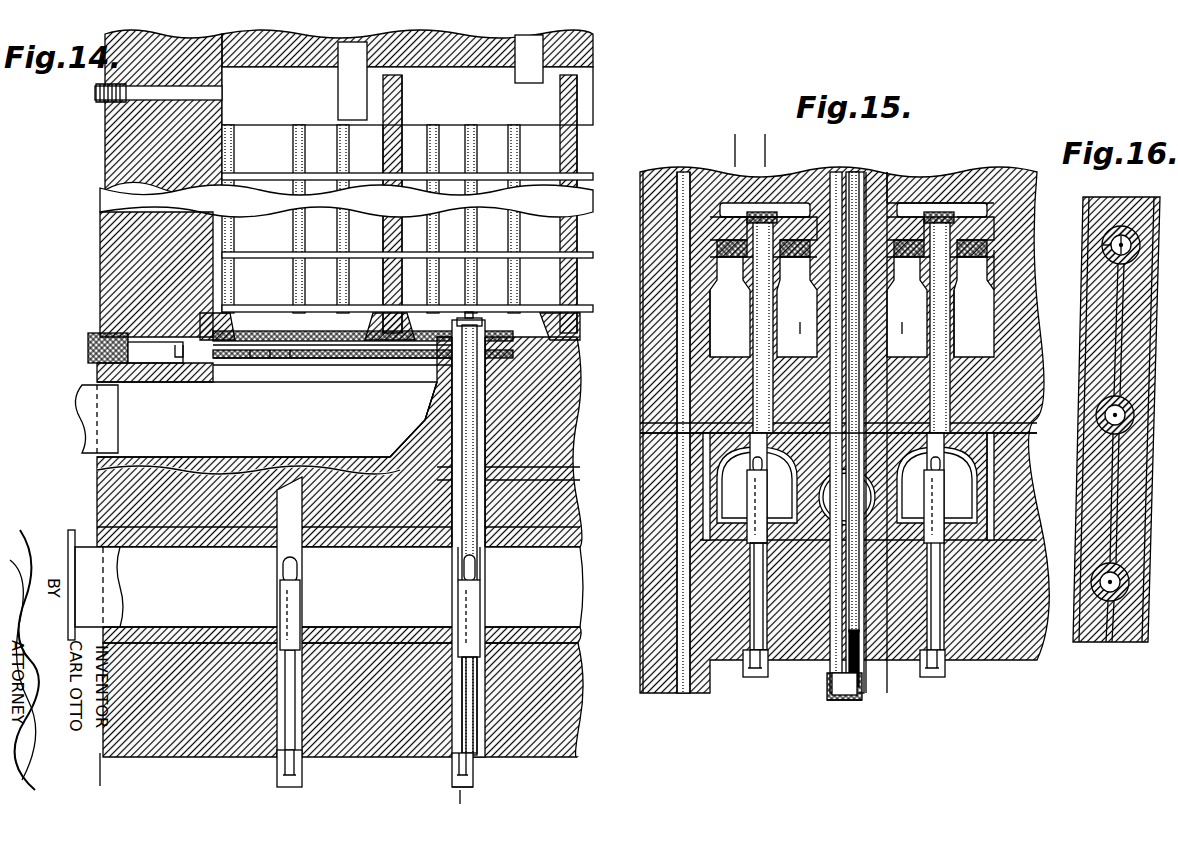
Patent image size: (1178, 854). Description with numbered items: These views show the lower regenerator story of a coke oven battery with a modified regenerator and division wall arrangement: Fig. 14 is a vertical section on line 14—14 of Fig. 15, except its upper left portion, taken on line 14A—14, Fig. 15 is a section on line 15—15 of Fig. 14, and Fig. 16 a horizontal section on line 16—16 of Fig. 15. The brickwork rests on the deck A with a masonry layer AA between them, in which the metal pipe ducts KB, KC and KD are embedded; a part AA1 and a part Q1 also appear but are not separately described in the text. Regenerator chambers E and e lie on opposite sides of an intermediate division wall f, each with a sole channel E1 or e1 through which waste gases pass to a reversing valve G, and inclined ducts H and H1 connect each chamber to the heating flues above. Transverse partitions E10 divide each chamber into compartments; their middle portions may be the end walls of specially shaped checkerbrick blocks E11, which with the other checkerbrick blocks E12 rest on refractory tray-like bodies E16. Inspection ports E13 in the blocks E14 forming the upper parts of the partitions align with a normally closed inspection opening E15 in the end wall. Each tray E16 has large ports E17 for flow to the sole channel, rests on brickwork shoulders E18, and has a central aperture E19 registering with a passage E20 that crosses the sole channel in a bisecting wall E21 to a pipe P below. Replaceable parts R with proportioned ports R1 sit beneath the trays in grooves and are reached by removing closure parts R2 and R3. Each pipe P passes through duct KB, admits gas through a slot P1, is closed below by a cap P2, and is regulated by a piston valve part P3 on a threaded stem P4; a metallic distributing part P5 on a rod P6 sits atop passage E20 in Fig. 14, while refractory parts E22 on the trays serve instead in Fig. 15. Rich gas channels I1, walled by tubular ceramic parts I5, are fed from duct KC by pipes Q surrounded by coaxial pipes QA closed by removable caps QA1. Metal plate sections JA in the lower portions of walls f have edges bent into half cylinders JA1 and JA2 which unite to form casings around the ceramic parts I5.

In FIG. 14, the inclined duct H is at (256, 78).
In FIG. 14, the inclined duct H1 is at (355, 76).
In FIG. 15, the regenerator chamber E is at (757, 186).
In FIG. 14, the sole channel E1 is at (274, 442).
In FIG. 15, the sole channel E1 is at (720, 306).
In FIG. 14, the transverse partition E10 is at (395, 225).
In FIG. 14, the checkerbrick block E11 is at (355, 142).
In FIG. 14, the checkerbrick block E12 is at (240, 125).
In FIG. 14, the inspection port E13 is at (400, 106).
In FIG. 14, the block E14 is at (403, 111).
In FIG. 14, the inspection opening E15 is at (155, 100).
In FIG. 14, the tray-like body E16 is at (380, 337).
In FIG. 15, the tray-like body E16 is at (810, 206).
In FIG. 14, the port E17 is at (295, 338).
In FIG. 15, the port E17 is at (720, 230).
In FIG. 14, the brickwork shoulder E18 is at (320, 366).
In FIG. 15, the brickwork shoulder E18 is at (718, 246).
In FIG. 14, the central aperture E19 is at (446, 366).
In FIG. 15, the central aperture E19 is at (740, 216).
In FIG. 14, the passage E20 is at (250, 535).
In FIG. 15, the passage E20 is at (760, 340).
In FIG. 14, the bisecting wall E21 is at (433, 430).
In FIG. 15, the bisecting wall E21 is at (750, 320).
In FIG. 15, the refractory distributing part E22 is at (748, 206).
In FIG. 14, the ported part R is at (240, 360).
In FIG. 15, the ported part R is at (745, 272).
In FIG. 14, the port R1 is at (282, 372).
In FIG. 15, the port R1 is at (1000, 278).
In FIG. 14, the closure part R2 is at (90, 346).
In FIG. 14, the closure part R3 is at (176, 366).
In FIG. 14, the reversing valve G is at (66, 414).
In FIG. 14, the vertical pipe P is at (283, 616).
In FIG. 15, the vertical pipe P is at (745, 666).
In FIG. 14, the slot P1 is at (283, 570).
In FIG. 15, the slot P1 is at (940, 474).
In FIG. 14, the cap P2 is at (277, 774).
In FIG. 15, the cap P2 is at (940, 679).
In FIG. 14, the piston valve part P3 is at (298, 622).
In FIG. 15, the piston valve part P3 is at (755, 498).
In FIG. 14, the supporting stem P4 is at (455, 670).
In FIG. 15, the supporting stem P4 is at (757, 626).
In FIG. 14, the flow distributing part P5 is at (458, 323).
In FIG. 14, the rod part P6 is at (478, 560).
In FIG. 14, the duct KB is at (329, 587).
In FIG. 15, the duct KB is at (937, 485).
In FIG. 15, the duct KC is at (852, 497).
In FIG. 15, the duct KD is at (714, 494).
In FIG. 14, the masonry layer AA is at (560, 645).
In FIG. 15, the masonry layer AA is at (652, 462).
In FIG. 15, the wall AA1 is at (990, 502).
In FIG. 14, the deck A is at (566, 740).
In FIG. 14, the coaxial pipe QA is at (452, 772).
In FIG. 15, the coaxial pipe QA is at (860, 692).
In FIG. 14, the removable cap QA1 is at (475, 787).
In FIG. 15, the removable cap QA1 is at (845, 692).
In FIG. 15, the pipe Q is at (843, 626).
In FIG. 15, the rod end Q1 is at (832, 692).
In FIG. 15, the metal plate section JA is at (690, 322).
In FIG. 16, the metal plate section JA is at (1118, 326).
In FIG. 15, the half cylinder JA1 is at (832, 188).
In FIG. 16, the half cylinder JA1 is at (1118, 226).
In FIG. 15, the half cylinder JA2 is at (878, 188).
In FIG. 16, the half cylinder JA2 is at (1110, 284).
In FIG. 15, the rich fuel gas channel I1 is at (880, 300).
In FIG. 16, the rich fuel gas channel I1 is at (1125, 226).
In FIG. 15, the tubular ceramic part I5 is at (880, 356).
In FIG. 16, the tubular ceramic part I5 is at (1105, 240).
In FIG. 15, the regenerator chamber e is at (928, 190).
In FIG. 15, the sole channel e1 is at (968, 323).
In FIG. 15, the intermediate regenerator division wall f is at (890, 176).
In FIG. 16, the intermediate regenerator division wall f is at (1085, 358).
In FIG. 15, the section line 14 is at (765, 134).
In FIG. 15, the section line 14A is at (742, 464).
In FIG. 14, the section line 15 is at (470, 322).
In FIG. 15, the section line 16 is at (800, 336).